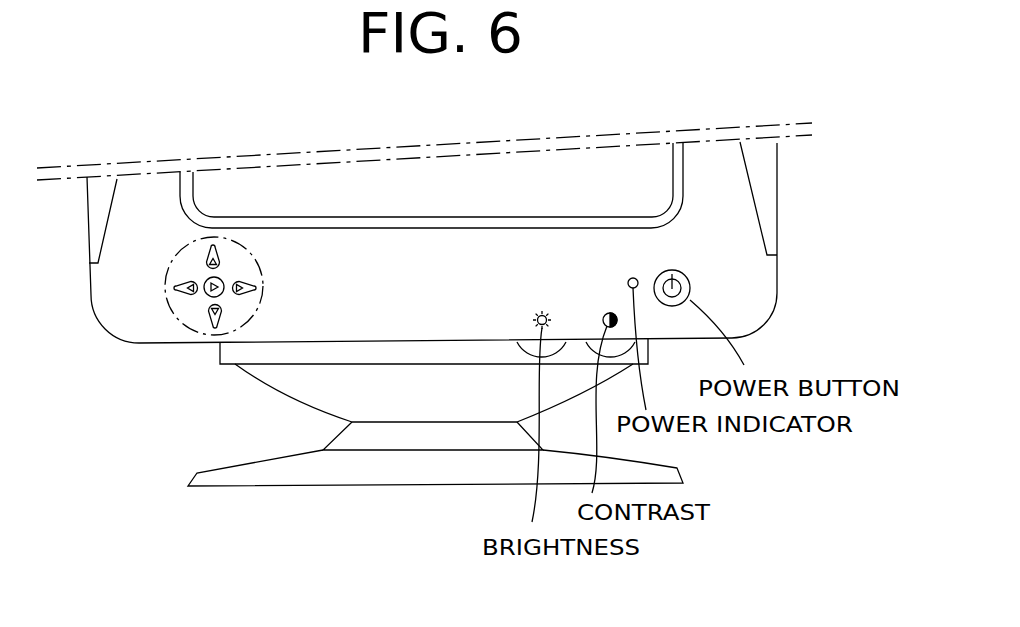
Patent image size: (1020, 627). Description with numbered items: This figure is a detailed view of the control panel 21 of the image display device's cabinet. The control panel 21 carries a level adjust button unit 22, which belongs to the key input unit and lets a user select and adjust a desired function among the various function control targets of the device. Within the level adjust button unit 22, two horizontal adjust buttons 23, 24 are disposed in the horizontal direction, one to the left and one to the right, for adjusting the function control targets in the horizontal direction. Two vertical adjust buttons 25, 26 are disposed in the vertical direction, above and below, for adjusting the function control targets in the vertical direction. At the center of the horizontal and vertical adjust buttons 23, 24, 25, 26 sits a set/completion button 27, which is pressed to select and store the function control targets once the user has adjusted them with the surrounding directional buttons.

The control panel 21 is at (630, 237).
The level adjust button unit 22 is at (176, 313).
The horizontal adjust button 23 is at (175, 288).
The horizontal adjust button 24 is at (247, 278).
The vertical adjust button 25 is at (207, 256).
The vertical adjust button 26 is at (209, 320).
The set/completion button 27 is at (218, 278).